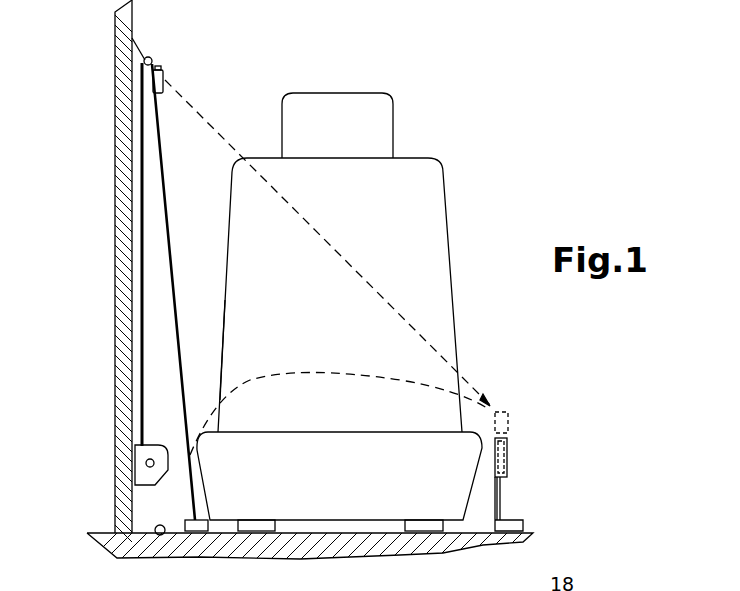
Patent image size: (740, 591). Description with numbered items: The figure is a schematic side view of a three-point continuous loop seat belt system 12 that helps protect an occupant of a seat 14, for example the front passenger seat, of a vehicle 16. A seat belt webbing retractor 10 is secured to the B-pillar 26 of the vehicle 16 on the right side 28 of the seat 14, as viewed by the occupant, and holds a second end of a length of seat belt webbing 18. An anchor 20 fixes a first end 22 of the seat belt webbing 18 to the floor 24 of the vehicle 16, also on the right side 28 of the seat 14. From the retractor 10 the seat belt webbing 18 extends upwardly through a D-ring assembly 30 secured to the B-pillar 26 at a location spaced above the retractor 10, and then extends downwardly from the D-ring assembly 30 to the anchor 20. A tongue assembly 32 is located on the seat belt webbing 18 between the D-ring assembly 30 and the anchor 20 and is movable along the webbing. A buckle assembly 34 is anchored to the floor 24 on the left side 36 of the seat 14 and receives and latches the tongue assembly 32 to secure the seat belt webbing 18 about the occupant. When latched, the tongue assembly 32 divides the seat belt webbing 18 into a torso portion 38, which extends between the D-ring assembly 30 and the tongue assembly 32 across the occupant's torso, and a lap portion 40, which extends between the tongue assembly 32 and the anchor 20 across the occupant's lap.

The seat belt webbing retractor 10 is at (126, 467).
The three-point continuous loop seat belt system 12 is at (438, 110).
The seat 14 is at (420, 171).
The vehicle 16 is at (120, 550).
The seat belt webbing 18 is at (176, 283).
The anchor 20 is at (202, 517).
The first end 22 is at (188, 497).
The floor 24 is at (160, 535).
The B-pillar 26 is at (128, 358).
The right side 28 is at (220, 345).
The D-ring assembly 30 is at (140, 47).
The tongue assembly 32 is at (165, 78).
The buckle assembly 34 is at (508, 475).
The left side 36 is at (450, 248).
The torso portion 38 is at (382, 300).
The lap portion 40 is at (353, 370).